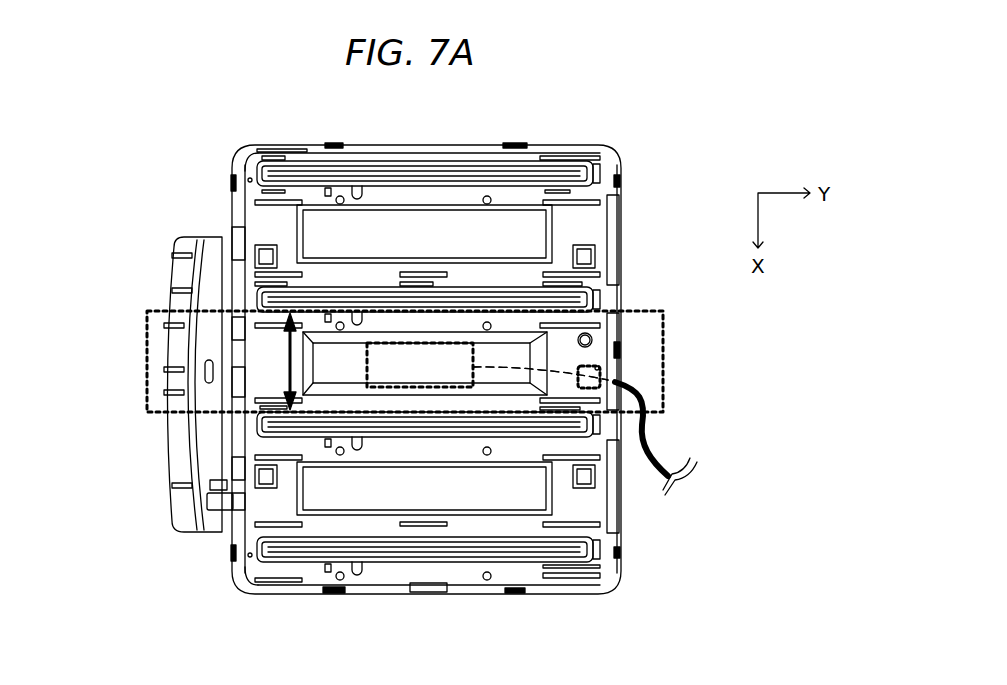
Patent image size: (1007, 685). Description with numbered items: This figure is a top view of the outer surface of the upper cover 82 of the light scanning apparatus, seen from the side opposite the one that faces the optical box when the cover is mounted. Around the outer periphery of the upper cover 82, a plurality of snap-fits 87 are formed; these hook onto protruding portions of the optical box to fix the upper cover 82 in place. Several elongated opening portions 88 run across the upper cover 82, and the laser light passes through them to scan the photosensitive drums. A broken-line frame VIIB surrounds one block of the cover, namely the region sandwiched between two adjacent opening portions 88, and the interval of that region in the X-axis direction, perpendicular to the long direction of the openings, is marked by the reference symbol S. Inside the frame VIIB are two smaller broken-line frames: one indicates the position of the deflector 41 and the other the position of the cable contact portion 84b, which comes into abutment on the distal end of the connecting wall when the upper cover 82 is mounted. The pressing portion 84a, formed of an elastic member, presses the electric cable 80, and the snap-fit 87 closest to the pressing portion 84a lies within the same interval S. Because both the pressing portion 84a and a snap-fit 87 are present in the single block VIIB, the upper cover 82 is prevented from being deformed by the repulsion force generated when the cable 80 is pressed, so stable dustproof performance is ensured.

The deflector 41 is at (367, 370).
The electric cable 80 is at (657, 458).
The upper cover 82 is at (630, 211).
The pressing portion 84a is at (653, 406).
The cable contact portion 84b is at (597, 368).
The snap-fit 87 is at (336, 143).
The opening portion 88 is at (267, 175).
The interval of region S is at (287, 360).
The broken-line frame VIIB is at (147, 374).